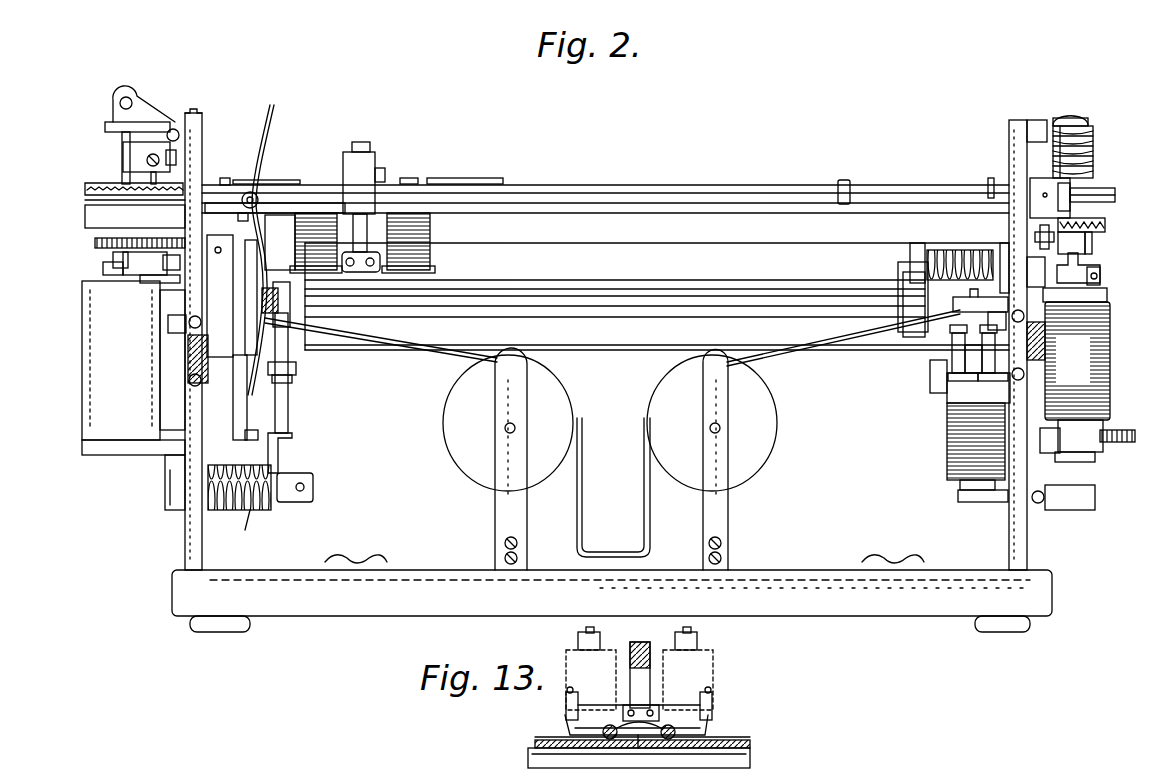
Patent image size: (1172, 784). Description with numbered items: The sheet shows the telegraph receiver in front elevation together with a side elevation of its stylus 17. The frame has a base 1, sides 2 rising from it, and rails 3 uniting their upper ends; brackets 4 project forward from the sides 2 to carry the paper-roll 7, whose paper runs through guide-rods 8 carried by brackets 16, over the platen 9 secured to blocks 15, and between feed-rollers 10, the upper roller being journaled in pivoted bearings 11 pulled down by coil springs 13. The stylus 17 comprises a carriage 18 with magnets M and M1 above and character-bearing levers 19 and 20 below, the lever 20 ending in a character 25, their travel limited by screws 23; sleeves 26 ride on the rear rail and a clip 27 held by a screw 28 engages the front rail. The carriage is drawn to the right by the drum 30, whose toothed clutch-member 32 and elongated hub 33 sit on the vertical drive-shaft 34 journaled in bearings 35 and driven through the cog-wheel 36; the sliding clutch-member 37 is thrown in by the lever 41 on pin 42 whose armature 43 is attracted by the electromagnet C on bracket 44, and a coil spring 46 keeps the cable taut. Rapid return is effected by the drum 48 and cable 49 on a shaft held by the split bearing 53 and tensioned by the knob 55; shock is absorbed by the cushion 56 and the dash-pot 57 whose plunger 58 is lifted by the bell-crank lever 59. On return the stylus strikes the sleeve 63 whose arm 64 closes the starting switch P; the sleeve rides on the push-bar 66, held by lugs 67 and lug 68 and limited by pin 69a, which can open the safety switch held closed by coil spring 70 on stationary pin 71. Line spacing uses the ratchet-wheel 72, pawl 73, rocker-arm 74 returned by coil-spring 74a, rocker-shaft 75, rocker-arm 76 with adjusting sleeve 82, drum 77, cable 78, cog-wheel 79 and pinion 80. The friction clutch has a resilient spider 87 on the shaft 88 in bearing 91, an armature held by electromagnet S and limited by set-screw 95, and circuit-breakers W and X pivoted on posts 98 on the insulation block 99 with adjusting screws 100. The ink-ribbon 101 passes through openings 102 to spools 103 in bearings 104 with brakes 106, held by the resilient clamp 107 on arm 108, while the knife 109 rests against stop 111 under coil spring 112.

In FIG. 2, the base 1 is at (612, 601).
In FIG. 2, the sides 2 is at (185, 545).
In FIG. 2, the rails 3 is at (640, 186).
In FIG. 2, the brackets 4 is at (170, 355).
In FIG. 13, the paper-roll 7 is at (535, 744).
In FIG. 2, the guide-rods 8 is at (622, 288).
In FIG. 2, the platen 9 is at (628, 320).
In FIG. 13, the platen 9 is at (750, 758).
In FIG. 2, the feed-rollers 10 is at (650, 236).
In FIG. 2, the bearings 11 is at (1000, 255).
In FIG. 2, the coil springs 13 is at (577, 337).
In FIG. 2, the blocks 15 is at (998, 320).
In FIG. 2, the brackets 16 is at (292, 330).
In FIG. 2, the stylus 17 is at (360, 152).
In FIG. 2, the carriage 18 is at (361, 253).
In FIG. 13, the carriage 18 is at (650, 678).
In FIG. 13, the character-bearing lever 19 is at (712, 728).
In FIG. 13, the character-bearing lever 20 is at (565, 728).
In FIG. 13, the screws 23 is at (578, 692).
In FIG. 13, the character 25 is at (639, 752).
In FIG. 2, the sleeves 26 is at (490, 178).
In FIG. 2, the clip 27 is at (385, 172).
In FIG. 2, the screw 28 is at (375, 150).
In FIG. 2, the drum 30 is at (1115, 196).
In FIG. 2, the toothed clutch-member 32 is at (1106, 226).
In FIG. 2, the elongated hub 33 is at (1093, 138).
In FIG. 2, the drive-shaft 34 is at (1075, 116).
In FIG. 2, the bearings 35 is at (1036, 120).
In FIG. 2, the cog-wheel 36 is at (1130, 426).
In FIG. 2, the toothed clutch-member 37 is at (1095, 240).
In FIG. 2, the lever 41 is at (1100, 270).
In FIG. 2, the pin 42 is at (1100, 280).
In FIG. 2, the armature 43 is at (1107, 296).
In FIG. 2, the bracket 44 is at (1071, 441).
In FIG. 2, the coil spring 46 is at (1093, 160).
In FIG. 2, the drum 48 is at (85, 220).
In FIG. 2, the cable 49 is at (85, 192).
In FIG. 2, the bearing 53 is at (135, 157).
In FIG. 2, the knob 55 is at (104, 126).
In FIG. 2, the cushion 56 is at (226, 178).
In FIG. 2, the dash-pot 57 is at (82, 357).
In FIG. 2, the plunger 58 is at (122, 90).
In FIG. 2, the bell-crank lever 59 is at (148, 112).
In FIG. 2, the sleeve 63 is at (275, 202).
In FIG. 2, the arm 64 is at (278, 242).
In FIG. 2, the push-bar 66 is at (700, 200).
In FIG. 2, the lugs 67 is at (248, 205).
In FIG. 2, the lug 68 is at (844, 180).
In FIG. 2, the pin 69a is at (991, 178).
In FIG. 2, the coil spring 70 is at (1086, 243).
In FIG. 2, the stationary pin 71 is at (1053, 239).
In FIG. 2, the ratchet-wheel 72 is at (296, 370).
In FIG. 2, the pawl 73 is at (292, 380).
In FIG. 2, the rocker-arm 74 is at (290, 420).
In FIG. 2, the coil-spring 74a is at (241, 535).
In FIG. 2, the rocker-shaft 75 is at (315, 487).
In FIG. 2, the rocker-arm 76 is at (165, 480).
In FIG. 2, the drum 77 is at (103, 268).
In FIG. 2, the cable 78 is at (113, 256).
In FIG. 2, the cog-wheel 79 is at (95, 244).
In FIG. 2, the pinion 80 is at (151, 267).
In FIG. 2, the sleeve 82 is at (168, 322).
In FIG. 2, the resilient spider 87 is at (945, 392).
In FIG. 2, the shaft 88 is at (930, 372).
In FIG. 2, the bearing 91 is at (1100, 356).
In FIG. 2, the set-screw 95 is at (980, 301).
In FIG. 2, the posts 98 is at (978, 388).
In FIG. 2, the block of insulation 99 is at (945, 440).
In FIG. 2, the screws 100 is at (952, 345).
In FIG. 2, the ink-ribbon 101 is at (430, 360).
In FIG. 13, the ink-ribbon 101 is at (750, 738).
In FIG. 2, the openings 102 is at (280, 305).
In FIG. 2, the spools 103 is at (648, 402).
In FIG. 2, the bearings 104 is at (745, 520).
In FIG. 2, the resilient brakes 106 is at (580, 465).
In FIG. 2, the resilient clamp 107 is at (275, 108).
In FIG. 2, the arm 108 is at (239, 476).
In FIG. 2, the knife 109 is at (912, 250).
In FIG. 2, the stop 111 is at (950, 250).
In FIG. 2, the coil spring 112 is at (889, 293).
In FIG. 2, the magnets M is at (362, 243).
In FIG. 13, the magnets M is at (711, 656).
In FIG. 13, the magnets M1 is at (570, 658).
In FIG. 2, the starting switch P is at (245, 268).
In FIG. 2, the electromagnet S is at (945, 475).
In FIG. 2, the electromagnet C is at (1073, 360).
In FIG. 2, the block V is at (1075, 195).
In FIG. 2, the circuit-breaker W is at (930, 379).
In FIG. 2, the circuit-breaker X is at (947, 389).